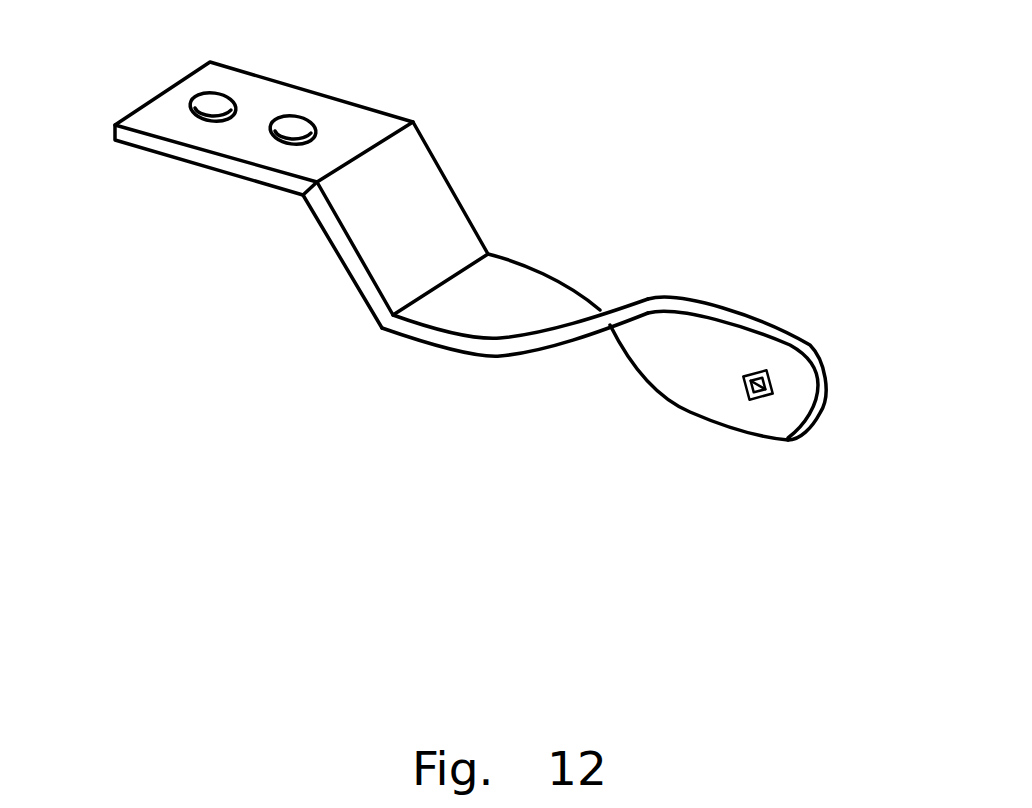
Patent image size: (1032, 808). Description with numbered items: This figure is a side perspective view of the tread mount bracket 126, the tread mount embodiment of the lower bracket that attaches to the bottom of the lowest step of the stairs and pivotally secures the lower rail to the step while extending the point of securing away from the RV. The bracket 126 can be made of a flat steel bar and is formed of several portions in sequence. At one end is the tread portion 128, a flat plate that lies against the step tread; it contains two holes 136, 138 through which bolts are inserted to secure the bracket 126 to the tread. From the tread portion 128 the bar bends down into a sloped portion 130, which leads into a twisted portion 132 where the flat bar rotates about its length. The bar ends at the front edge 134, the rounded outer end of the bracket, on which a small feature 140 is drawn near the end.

The tread mount bracket 126 is at (565, 163).
The tread portion 128 is at (263, 90).
The sloped portion 130 is at (425, 202).
The twisted portion 132 is at (527, 302).
The front edge 134 is at (828, 392).
The hole 136 is at (193, 113).
The hole 138 is at (291, 138).
The contact element 140 is at (755, 372).